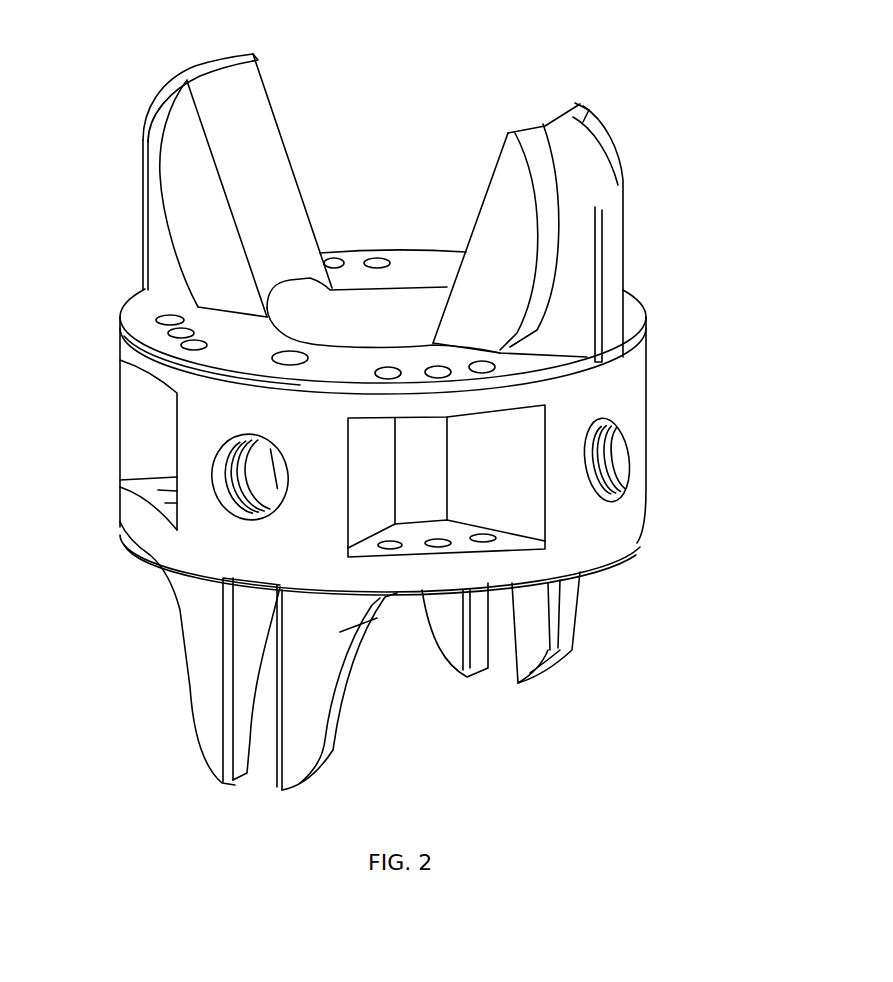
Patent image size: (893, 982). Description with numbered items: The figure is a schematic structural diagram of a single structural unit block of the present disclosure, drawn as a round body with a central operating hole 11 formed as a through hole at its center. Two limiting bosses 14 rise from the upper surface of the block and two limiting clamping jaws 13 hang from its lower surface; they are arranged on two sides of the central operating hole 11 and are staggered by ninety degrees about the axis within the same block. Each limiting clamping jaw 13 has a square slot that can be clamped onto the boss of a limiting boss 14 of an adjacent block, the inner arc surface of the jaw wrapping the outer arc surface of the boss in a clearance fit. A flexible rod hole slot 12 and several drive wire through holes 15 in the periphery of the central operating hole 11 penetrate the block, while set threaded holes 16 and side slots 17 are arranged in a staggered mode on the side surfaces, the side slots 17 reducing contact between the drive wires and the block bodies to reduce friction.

The central operating hole 11 is at (340, 320).
The flexible rod hole slot 12 is at (285, 363).
The limiting clamping jaw 13 is at (208, 665).
The limiting boss 14 is at (575, 207).
The drive wire through hole 15 is at (490, 366).
The set threaded hole 16 is at (617, 452).
The side slot 17 is at (487, 498).